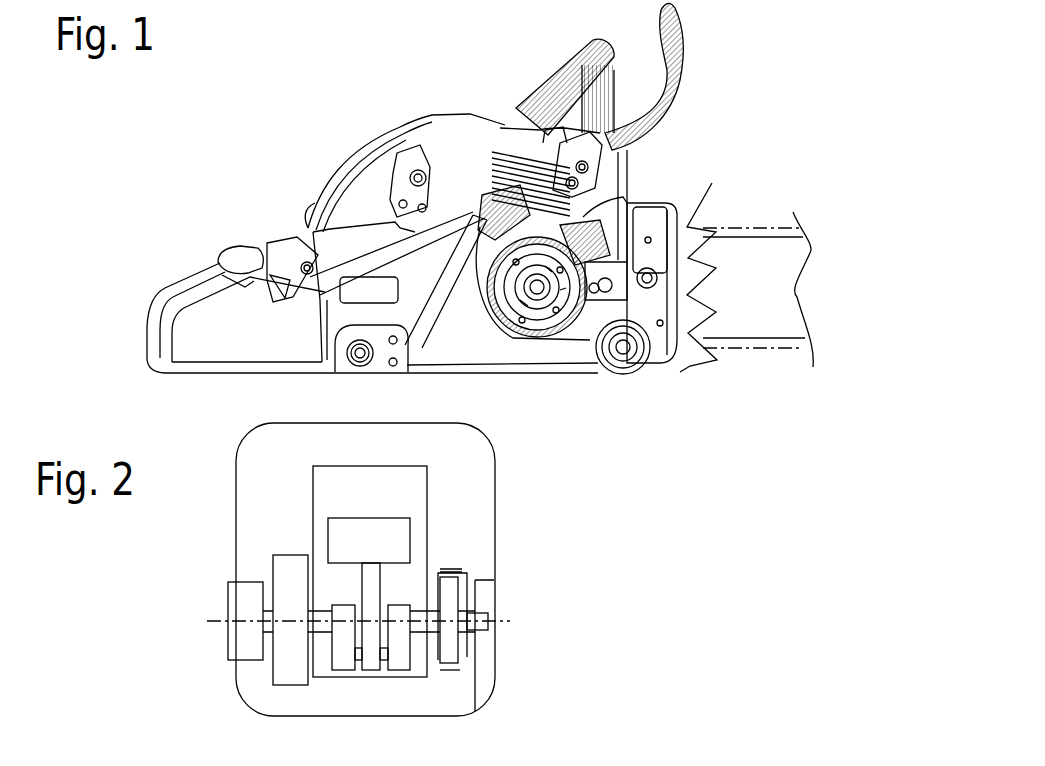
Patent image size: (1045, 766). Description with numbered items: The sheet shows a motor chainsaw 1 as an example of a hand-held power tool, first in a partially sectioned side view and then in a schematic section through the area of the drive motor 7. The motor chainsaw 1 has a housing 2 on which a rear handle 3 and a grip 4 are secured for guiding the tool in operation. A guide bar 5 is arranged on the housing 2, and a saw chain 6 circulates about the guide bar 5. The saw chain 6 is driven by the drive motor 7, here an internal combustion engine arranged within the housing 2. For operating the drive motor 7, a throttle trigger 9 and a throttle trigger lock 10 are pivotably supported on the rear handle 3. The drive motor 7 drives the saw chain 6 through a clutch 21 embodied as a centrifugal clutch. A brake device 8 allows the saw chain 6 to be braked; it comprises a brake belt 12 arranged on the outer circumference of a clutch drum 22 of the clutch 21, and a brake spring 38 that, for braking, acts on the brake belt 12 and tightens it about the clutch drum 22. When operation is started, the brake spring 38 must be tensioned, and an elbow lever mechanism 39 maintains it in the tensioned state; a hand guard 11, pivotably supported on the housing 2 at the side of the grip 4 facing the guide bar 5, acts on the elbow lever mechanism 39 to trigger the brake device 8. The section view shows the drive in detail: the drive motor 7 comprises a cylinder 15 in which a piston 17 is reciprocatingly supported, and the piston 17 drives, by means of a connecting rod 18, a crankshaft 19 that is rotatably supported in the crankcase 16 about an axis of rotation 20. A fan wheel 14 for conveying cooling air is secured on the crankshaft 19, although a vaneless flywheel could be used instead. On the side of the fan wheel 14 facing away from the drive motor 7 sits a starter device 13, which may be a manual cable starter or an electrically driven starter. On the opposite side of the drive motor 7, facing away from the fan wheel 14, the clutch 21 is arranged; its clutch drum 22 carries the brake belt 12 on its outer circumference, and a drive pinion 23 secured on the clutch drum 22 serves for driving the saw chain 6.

In FIG. 1, the motor chainsaw 1 is at (200, 128).
In FIG. 1, the housing 2 is at (568, 352).
In FIG. 2, the housing 2 is at (495, 512).
In FIG. 1, the rear handle 3 is at (198, 275).
In FIG. 1, the grip 4 is at (563, 67).
In FIG. 1, the guide bar 5 is at (747, 250).
In FIG. 1, the saw chain 6 is at (757, 228).
In FIG. 1, the drive motor 7 is at (520, 235).
In FIG. 2, the drive motor 7 is at (330, 462).
In FIG. 1, the brake device 8 is at (612, 288).
In FIG. 1, the throttle trigger 9 is at (287, 295).
In FIG. 1, the throttle trigger lock 10 is at (232, 255).
In FIG. 1, the hand guard 11 is at (672, 42).
In FIG. 1, the brake belt 12 is at (555, 232).
In FIG. 2, the brake belt 12 is at (448, 568).
In FIG. 2, the starter device 13 is at (235, 600).
In FIG. 2, the fan wheel 14 is at (283, 572).
In FIG. 2, the cylinder 15 is at (313, 493).
In FIG. 2, the crankcase 16 is at (340, 675).
In FIG. 2, the piston 17 is at (398, 532).
In FIG. 2, the connecting rod 18 is at (370, 650).
In FIG. 2, the crankshaft 19 is at (415, 630).
In FIG. 2, the axis of rotation 20 is at (507, 613).
In FIG. 1, the clutch 21 is at (520, 322).
In FIG. 2, the clutch 21 is at (462, 675).
In FIG. 1, the clutch drum 22 is at (570, 323).
In FIG. 2, the clutch drum 22 is at (467, 655).
In FIG. 2, the drive pinion 23 is at (482, 625).
In FIG. 1, the brake spring 38 is at (512, 235).
In FIG. 1, the elbow lever mechanism 39 is at (617, 207).